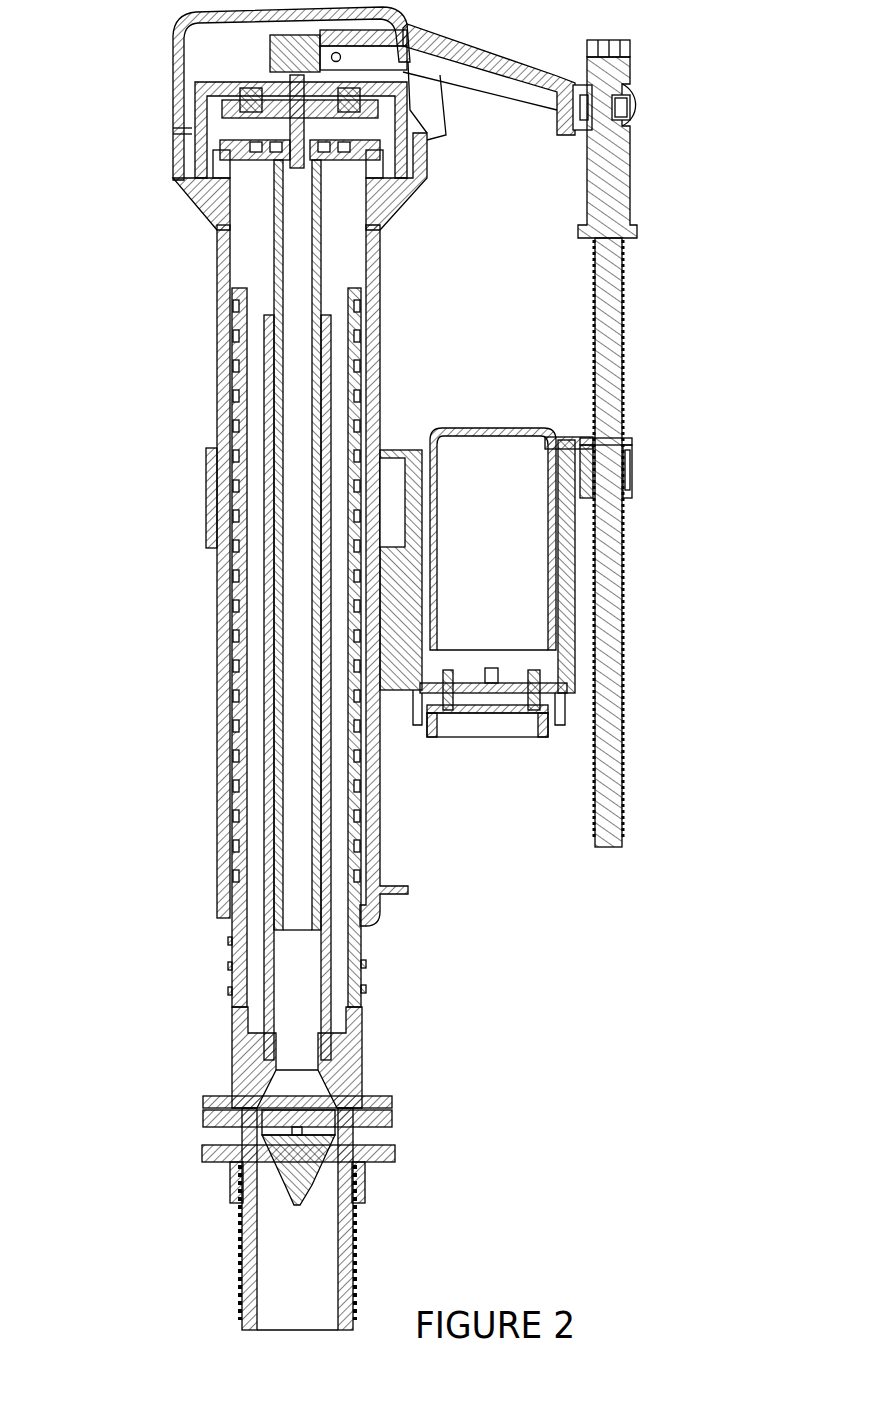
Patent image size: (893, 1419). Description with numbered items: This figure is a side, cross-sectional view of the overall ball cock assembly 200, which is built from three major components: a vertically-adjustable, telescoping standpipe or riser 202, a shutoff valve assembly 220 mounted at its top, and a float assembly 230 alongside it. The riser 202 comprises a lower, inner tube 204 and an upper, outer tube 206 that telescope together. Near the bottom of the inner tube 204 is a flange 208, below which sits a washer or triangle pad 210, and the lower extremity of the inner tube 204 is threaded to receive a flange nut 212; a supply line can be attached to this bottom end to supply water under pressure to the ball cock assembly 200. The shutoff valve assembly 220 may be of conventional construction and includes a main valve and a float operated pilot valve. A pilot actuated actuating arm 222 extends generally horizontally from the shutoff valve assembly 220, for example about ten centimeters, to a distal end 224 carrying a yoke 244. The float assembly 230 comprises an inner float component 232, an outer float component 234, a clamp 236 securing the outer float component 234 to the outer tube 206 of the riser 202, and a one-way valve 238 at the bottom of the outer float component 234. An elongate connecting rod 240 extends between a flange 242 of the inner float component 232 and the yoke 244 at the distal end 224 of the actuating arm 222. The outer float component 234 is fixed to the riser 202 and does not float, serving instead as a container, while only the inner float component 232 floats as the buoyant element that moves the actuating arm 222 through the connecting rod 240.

The ball cock assembly 200 is at (742, 88).
The telescoping standpipe (riser) 202 is at (188, 632).
The inner tube 204 is at (232, 1012).
The outer tube 206 is at (226, 756).
The flange 208 is at (230, 1110).
The washer (triangle pad) 210 is at (205, 1125).
The flange nut 212 is at (232, 1180).
The shutoff valve assembly 220 is at (124, 78).
The actuating arm 222 is at (470, 50).
The distal end 224 is at (650, 105).
The float assembly 230 is at (447, 398).
The inner float component 232 is at (478, 428).
The outer float component 234 is at (575, 540).
The clamp 236 is at (206, 500).
The one-way valve 238 is at (558, 724).
The connecting rod 240 is at (623, 655).
The flange 242 is at (632, 440).
The yoke 244 is at (638, 60).